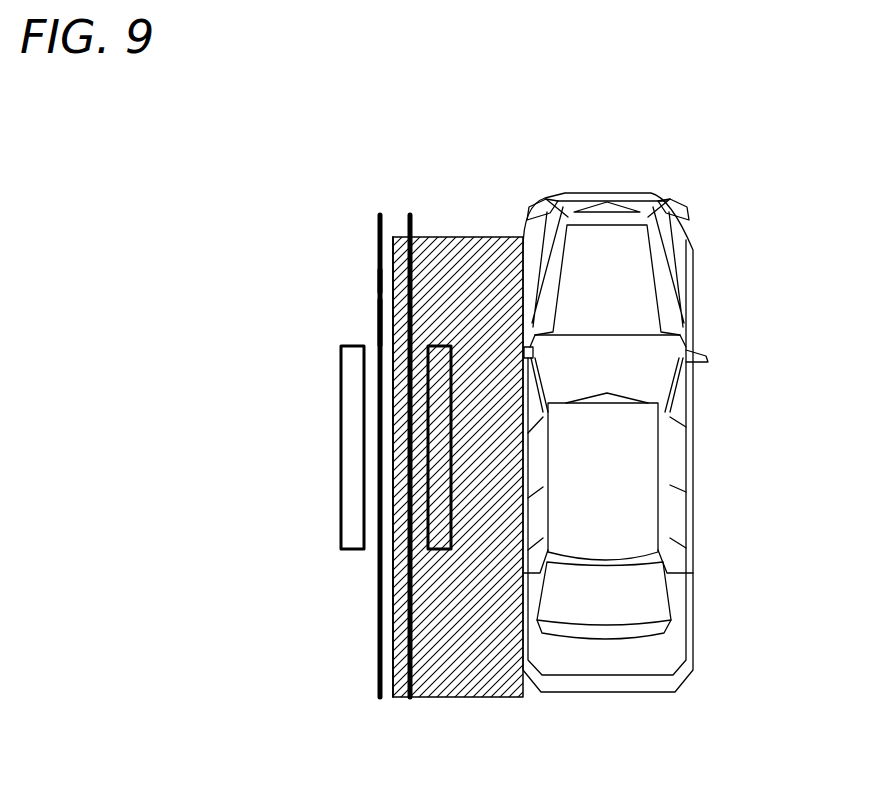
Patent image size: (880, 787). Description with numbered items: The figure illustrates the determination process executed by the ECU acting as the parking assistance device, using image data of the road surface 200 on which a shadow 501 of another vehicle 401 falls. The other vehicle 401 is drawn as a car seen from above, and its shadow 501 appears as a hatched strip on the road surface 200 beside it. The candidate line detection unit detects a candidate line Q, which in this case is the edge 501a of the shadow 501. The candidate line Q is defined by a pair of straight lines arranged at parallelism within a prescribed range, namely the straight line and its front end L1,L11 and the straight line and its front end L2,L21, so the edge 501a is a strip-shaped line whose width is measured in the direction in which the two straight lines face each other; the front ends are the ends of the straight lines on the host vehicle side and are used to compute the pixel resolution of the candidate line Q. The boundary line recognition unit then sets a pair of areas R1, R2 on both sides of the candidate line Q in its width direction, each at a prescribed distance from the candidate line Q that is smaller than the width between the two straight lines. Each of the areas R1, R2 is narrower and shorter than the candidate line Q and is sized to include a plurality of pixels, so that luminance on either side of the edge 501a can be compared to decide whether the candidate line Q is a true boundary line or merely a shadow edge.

The shadow 501 is at (488, 237).
The edge of the shadow 501a is at (393, 235).
The straight line and its front end L1,L11 is at (410, 214).
The straight line and its front end L2,L21 is at (380, 214).
The candidate line Q is at (377, 280).
The road surface 200 is at (360, 320).
The area R2 is at (351, 551).
The area R1 is at (440, 551).
The another vehicle 401 is at (695, 604).